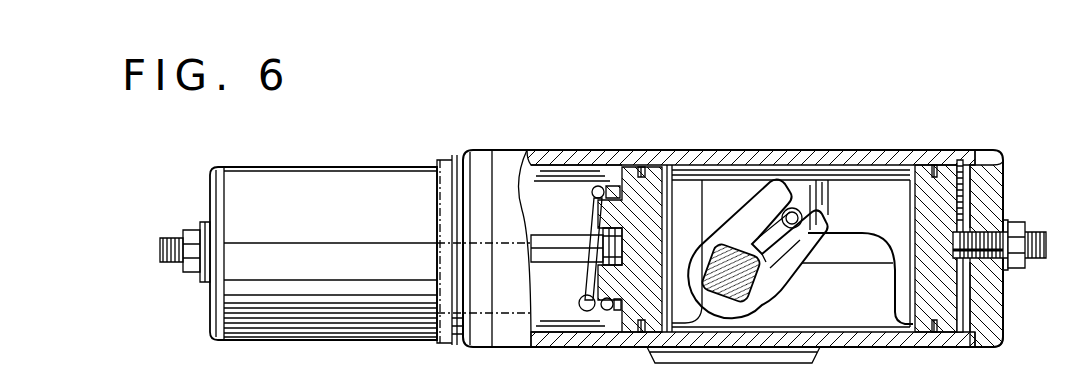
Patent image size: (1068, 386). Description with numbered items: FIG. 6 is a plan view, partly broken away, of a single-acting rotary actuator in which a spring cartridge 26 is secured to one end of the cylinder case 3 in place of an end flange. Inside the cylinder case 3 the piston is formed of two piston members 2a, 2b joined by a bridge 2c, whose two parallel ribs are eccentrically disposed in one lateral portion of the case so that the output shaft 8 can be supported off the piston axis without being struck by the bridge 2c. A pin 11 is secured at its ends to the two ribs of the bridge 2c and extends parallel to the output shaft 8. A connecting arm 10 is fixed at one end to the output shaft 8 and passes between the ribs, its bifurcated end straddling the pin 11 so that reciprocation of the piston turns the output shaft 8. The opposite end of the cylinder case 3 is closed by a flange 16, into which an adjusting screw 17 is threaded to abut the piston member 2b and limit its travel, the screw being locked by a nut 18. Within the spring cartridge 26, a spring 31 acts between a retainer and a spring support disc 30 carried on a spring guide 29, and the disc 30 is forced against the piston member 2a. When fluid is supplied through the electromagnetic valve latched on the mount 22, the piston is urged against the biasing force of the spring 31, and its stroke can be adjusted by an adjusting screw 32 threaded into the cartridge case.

The cylinder case 3 is at (777, 149).
The spring cartridge 26 is at (399, 160).
The adjusting screw 32 is at (172, 235).
The piston member 2a is at (641, 166).
The piston member 2b is at (934, 165).
The bridge 2c is at (853, 238).
The spring guide 29 is at (555, 256).
The spring 31 is at (592, 198).
The spring support disc 30 is at (616, 313).
The connecting arm 10 is at (790, 268).
The output shaft 8 is at (752, 286).
The pin 11 is at (799, 214).
The flange 16 is at (985, 150).
The adjusting screw 17 is at (1040, 231).
The nut 18 is at (1017, 222).
The mount 22 is at (803, 362).